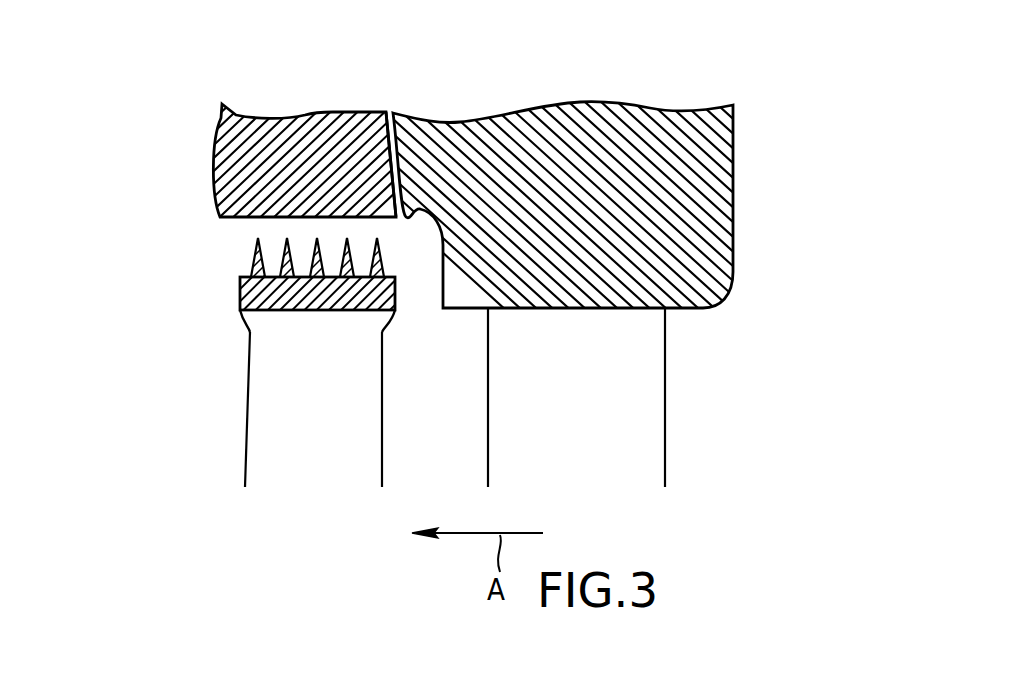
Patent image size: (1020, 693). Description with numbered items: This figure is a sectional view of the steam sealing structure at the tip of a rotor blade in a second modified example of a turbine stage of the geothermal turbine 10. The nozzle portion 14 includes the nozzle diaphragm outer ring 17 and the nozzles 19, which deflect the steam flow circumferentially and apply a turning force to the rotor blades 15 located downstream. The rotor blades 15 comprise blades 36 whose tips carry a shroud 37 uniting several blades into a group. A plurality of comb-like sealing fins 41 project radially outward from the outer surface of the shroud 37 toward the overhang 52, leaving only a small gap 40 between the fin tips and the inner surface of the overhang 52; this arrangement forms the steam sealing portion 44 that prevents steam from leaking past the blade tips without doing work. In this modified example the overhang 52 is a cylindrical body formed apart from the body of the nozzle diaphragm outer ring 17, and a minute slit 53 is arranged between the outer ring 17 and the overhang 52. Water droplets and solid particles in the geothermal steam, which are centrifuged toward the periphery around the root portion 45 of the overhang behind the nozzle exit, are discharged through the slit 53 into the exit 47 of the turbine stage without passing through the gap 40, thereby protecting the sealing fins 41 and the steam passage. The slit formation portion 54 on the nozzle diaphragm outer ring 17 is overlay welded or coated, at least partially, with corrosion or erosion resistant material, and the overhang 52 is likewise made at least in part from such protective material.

The geothermal turbine 10 is at (181, 95).
The nozzle portion 14 is at (790, 321).
The rotor blades 15 is at (238, 450).
The nozzle diaphragm outer ring 17 is at (703, 310).
The nozzles 19 is at (643, 413).
The blades 36 is at (255, 412).
The shroud 37 is at (243, 306).
The gap 40 is at (240, 235).
The sealing fins 41 is at (246, 262).
The steam sealing portion 44 is at (212, 289).
The root portion 45 is at (413, 290).
The exit of the turbine stage 47 is at (167, 183).
The overhang 52 is at (258, 118).
The slit 53 is at (388, 113).
The slit formation portion 54 is at (427, 198).